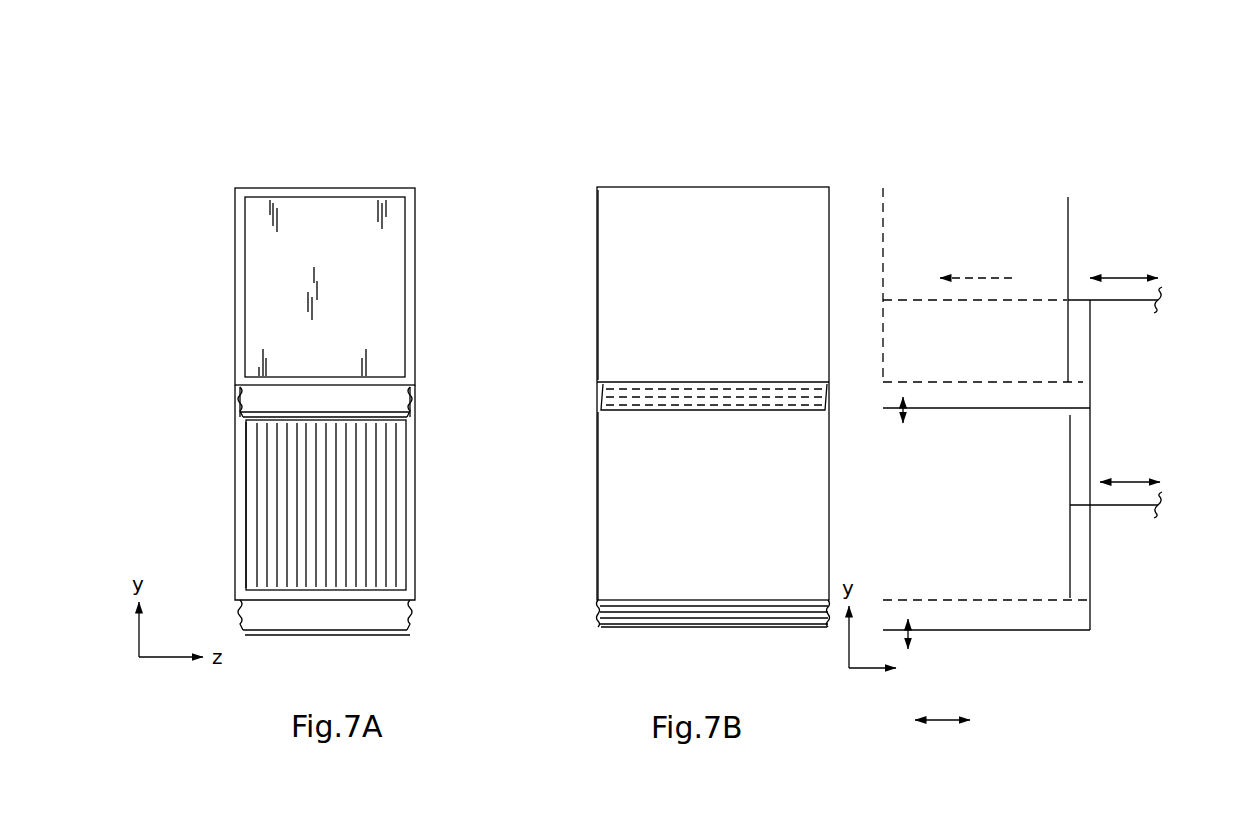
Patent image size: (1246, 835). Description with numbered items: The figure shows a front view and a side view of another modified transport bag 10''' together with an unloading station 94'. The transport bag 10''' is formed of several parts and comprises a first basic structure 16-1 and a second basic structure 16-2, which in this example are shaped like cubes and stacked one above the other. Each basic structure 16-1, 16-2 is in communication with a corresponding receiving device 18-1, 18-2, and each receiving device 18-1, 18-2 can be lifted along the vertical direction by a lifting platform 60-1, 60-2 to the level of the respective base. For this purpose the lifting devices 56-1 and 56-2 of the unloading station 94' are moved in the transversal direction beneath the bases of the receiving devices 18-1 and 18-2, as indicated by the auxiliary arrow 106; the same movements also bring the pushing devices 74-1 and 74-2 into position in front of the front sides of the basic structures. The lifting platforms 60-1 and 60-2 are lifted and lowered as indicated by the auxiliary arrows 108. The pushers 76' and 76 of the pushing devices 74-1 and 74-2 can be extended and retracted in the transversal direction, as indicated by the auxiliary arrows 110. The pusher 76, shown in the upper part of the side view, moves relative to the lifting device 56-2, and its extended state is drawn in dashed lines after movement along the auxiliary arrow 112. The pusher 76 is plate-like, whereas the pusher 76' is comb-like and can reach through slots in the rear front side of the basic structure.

In FIG. 7A, the transport bag 10''' is at (153, 183).
In FIG. 7B, the transport bag 10''' is at (713, 327).
In FIG. 7A, the pusher 76 is at (325, 346).
In FIG. 7B, the pusher 76 is at (1029, 257).
In FIG. 7A, the pusher 76' is at (192, 505).
In FIG. 7B, the pusher 76' is at (1130, 499).
In FIG. 7A, the first basic structure 16-1 is at (410, 505).
In FIG. 7B, the first basic structure 16-1 is at (617, 497).
In FIG. 7A, the second basic structure 16-2 is at (380, 277).
In FIG. 7B, the second basic structure 16-2 is at (638, 270).
In FIG. 7A, the receiving device 18-1 is at (405, 613).
In FIG. 7B, the receiving device 18-1 is at (594, 611).
In FIG. 7A, the receiving device 18-2 is at (402, 398).
In FIG. 7B, the receiving device 18-2 is at (612, 390).
In FIG. 7A, the lifting platform 60-1 is at (310, 636).
In FIG. 7B, the lifting platform 60-1 is at (1045, 631).
In FIG. 7A, the lifting platform 60-2 is at (256, 413).
In FIG. 7B, the lifting platform 60-2 is at (1027, 410).
In FIG. 7B, the unloading station 94' is at (983, 234).
In FIG. 7B, the auxiliary arrow 112 is at (980, 275).
In FIG. 7B, the auxiliary arrows 110 is at (1117, 275).
In FIG. 7B, the pushing device 74-1 is at (1118, 532).
In FIG. 7B, the pushing device 74-2 is at (1104, 310).
In FIG. 7B, the auxiliary arrows 108 is at (903, 410).
In FIG. 7B, the lifting device 56-1 is at (960, 640).
In FIG. 7B, the lifting device 56-2 is at (950, 414).
In FIG. 7B, the auxiliary arrow 106 is at (937, 722).